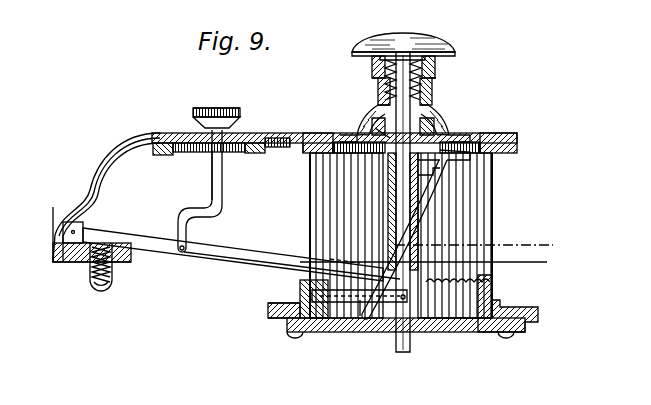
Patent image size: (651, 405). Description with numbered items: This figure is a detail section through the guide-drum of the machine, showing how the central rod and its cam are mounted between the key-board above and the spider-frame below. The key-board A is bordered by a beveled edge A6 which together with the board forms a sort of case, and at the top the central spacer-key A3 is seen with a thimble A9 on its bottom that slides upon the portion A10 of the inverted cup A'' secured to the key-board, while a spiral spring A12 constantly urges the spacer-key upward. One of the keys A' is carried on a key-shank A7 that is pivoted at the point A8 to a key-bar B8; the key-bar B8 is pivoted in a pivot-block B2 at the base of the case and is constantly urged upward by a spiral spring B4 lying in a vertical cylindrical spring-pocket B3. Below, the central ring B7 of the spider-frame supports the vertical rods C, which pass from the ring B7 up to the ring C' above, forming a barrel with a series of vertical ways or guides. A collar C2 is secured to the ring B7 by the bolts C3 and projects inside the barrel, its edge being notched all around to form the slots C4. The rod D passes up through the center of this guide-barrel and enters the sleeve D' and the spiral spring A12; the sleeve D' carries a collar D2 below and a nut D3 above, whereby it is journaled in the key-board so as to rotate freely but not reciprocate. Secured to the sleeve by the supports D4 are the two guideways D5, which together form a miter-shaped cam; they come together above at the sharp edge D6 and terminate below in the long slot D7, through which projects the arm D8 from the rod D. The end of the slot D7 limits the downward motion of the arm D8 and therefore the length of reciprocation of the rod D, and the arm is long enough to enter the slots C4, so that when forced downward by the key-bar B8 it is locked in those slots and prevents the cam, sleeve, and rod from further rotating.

The key-board A is at (334, 137).
The key A' is at (214, 170).
The central spacer-key A3 is at (405, 32).
The beveled edge A6 is at (93, 186).
The key-shank A7 is at (223, 202).
The pivot point A8 is at (187, 247).
The thimble A9 is at (436, 73).
The portion of inverted cup A10 is at (434, 96).
The inverted cup A'' is at (427, 120).
The spiral spring A12 is at (445, 62).
The pivot-block B2 is at (85, 224).
The spring-pocket B3 is at (113, 268).
The spiral spring B4 is at (101, 289).
The central ring of spider-frame B7 is at (512, 306).
The key-bar B8 is at (233, 243).
The vertical rod C is at (426, 235).
The ring C' is at (396, 162).
The collar C2 is at (332, 333).
The bolt C3 is at (520, 348).
The slot C4 is at (456, 334).
The rod D is at (397, 222).
The sleeve D' is at (357, 118).
The collar D2 is at (468, 135).
The nut D3 is at (385, 124).
The support D4 is at (446, 172).
The guideway D5 is at (450, 212).
The sharp edge D6 is at (520, 160).
The long slot D7 is at (362, 325).
The arm D8 is at (290, 303).